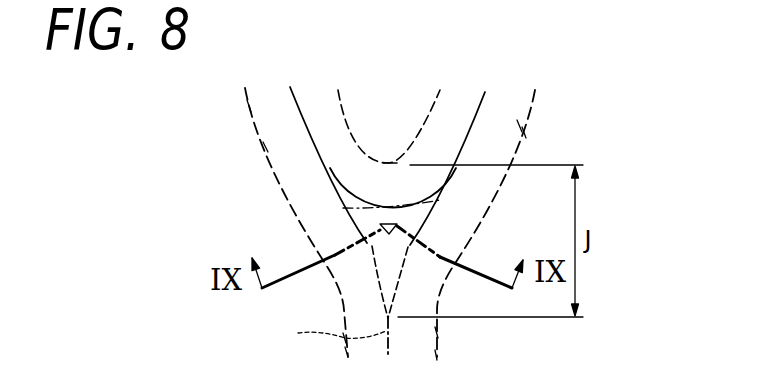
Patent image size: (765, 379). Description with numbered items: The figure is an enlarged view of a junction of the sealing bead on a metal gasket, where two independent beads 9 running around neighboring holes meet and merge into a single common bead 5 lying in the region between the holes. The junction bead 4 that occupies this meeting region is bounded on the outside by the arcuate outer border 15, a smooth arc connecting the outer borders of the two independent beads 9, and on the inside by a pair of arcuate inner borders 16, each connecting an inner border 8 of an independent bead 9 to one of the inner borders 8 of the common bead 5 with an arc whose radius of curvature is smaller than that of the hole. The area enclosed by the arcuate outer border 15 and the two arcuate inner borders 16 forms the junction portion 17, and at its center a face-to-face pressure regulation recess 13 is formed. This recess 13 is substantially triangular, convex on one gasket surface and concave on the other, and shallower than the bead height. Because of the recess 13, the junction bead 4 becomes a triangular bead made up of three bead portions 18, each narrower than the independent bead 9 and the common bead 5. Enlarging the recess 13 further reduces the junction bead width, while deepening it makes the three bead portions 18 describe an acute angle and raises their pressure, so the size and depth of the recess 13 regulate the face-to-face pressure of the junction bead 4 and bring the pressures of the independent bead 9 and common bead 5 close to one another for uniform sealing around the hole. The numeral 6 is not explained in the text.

The junction bead 4 is at (507, 85).
The common bead 5 is at (424, 355).
The inlet channel 6 is at (304, 118).
The inner border 8 is at (266, 147).
The independent bead 9 is at (266, 109).
The face-to-face pressure regulation recess 13 is at (447, 257).
The arcuate outer border 15 is at (392, 163).
The arcuate inner border 16 is at (318, 238).
The junction portion 17 is at (362, 215).
The bead portion 18 is at (392, 216).